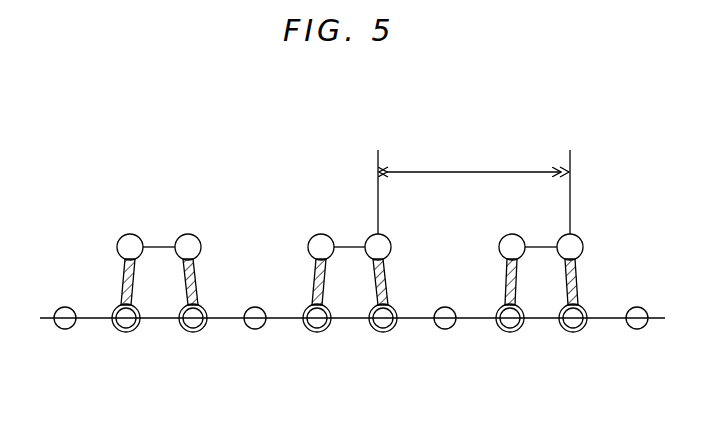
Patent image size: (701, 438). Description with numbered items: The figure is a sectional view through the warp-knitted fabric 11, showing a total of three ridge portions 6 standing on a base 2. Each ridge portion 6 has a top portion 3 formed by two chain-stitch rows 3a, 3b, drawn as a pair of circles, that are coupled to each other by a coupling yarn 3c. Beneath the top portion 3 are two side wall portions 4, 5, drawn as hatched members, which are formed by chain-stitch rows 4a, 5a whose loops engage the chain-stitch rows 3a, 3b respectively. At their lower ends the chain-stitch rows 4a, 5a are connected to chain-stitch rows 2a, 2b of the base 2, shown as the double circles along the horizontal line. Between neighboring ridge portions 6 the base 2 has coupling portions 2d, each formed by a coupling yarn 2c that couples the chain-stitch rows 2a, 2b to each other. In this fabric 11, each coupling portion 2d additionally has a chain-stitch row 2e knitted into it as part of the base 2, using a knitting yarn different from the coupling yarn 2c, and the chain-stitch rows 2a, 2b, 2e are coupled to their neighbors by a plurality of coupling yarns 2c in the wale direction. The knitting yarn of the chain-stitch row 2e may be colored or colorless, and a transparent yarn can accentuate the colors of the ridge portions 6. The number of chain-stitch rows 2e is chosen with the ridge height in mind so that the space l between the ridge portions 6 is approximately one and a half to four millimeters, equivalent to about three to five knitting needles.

The warp-knitted fabric 11 is at (44, 171).
The base 2 is at (606, 324).
The chain-stitch row 2a is at (505, 328).
The chain-stitch row 2b is at (192, 332).
The coupling yarn 2c is at (413, 322).
The coupling portion 2d is at (255, 278).
The chain-stitch row 2e is at (446, 305).
The top portion 3 is at (328, 202).
The chain-stitch row 3a is at (129, 234).
The chain-stitch row 3b is at (188, 234).
The coupling yarn 3c is at (540, 245).
The side wall portion 4 is at (121, 282).
The chain-stitch row 4a is at (520, 328).
The side wall portion 5 is at (198, 282).
The chain-stitch row 5a is at (203, 331).
The ridge portion 6 is at (349, 231).
The space between the ridge portions l is at (474, 192).